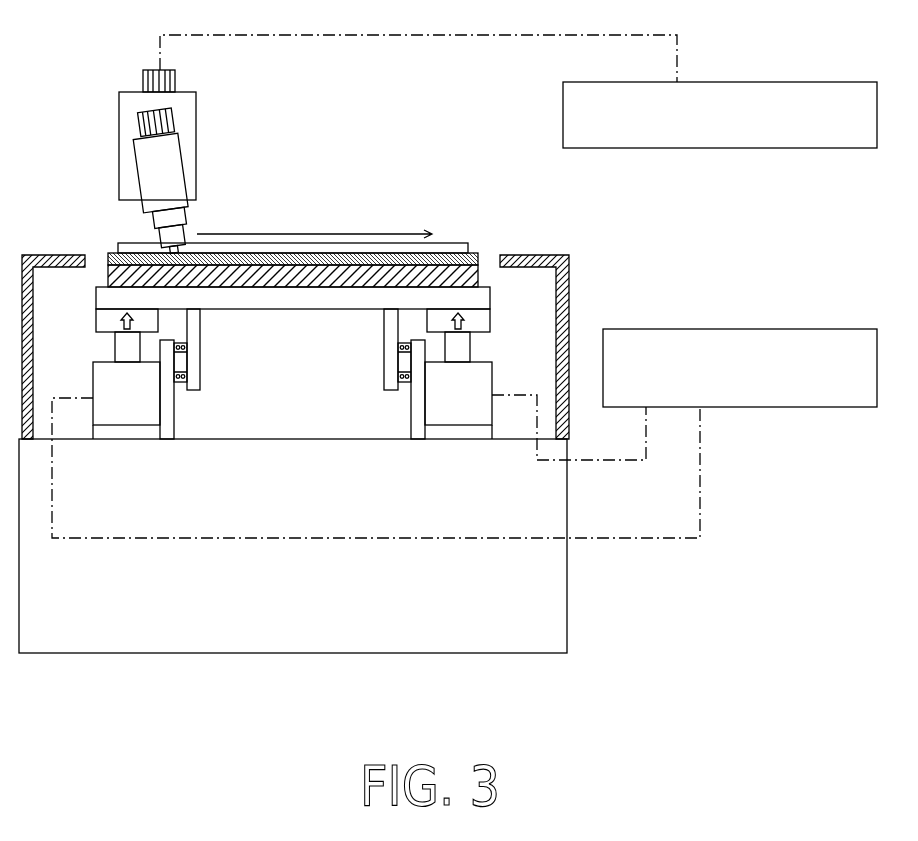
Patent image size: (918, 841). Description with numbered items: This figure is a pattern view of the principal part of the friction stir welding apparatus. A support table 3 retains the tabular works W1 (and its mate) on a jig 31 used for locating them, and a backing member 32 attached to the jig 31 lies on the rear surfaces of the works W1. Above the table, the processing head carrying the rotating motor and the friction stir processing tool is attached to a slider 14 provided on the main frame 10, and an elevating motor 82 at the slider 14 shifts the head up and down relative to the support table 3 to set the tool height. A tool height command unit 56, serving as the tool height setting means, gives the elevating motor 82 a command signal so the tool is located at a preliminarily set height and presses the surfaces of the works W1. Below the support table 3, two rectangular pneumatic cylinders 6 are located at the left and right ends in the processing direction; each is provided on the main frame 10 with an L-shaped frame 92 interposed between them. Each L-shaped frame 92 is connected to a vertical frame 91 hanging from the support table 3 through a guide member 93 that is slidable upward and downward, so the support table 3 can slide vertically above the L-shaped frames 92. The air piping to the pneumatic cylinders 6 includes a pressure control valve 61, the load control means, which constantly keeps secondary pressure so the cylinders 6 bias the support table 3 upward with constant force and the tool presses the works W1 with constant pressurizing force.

The support table 3 is at (483, 299).
The pneumatic cylinder 6 is at (105, 383).
The main frame 10 is at (327, 653).
The slider 14 is at (125, 132).
The jig 31 is at (482, 277).
The backing member 32 is at (473, 253).
The tool height command unit 56 is at (710, 148).
The pressure control valve 61 is at (748, 329).
The elevating motor 82 is at (142, 80).
The vertical frame 91 is at (193, 328).
The L-shaped frame 92 is at (168, 405).
The guide member 93 is at (182, 362).
The work W1 is at (453, 243).